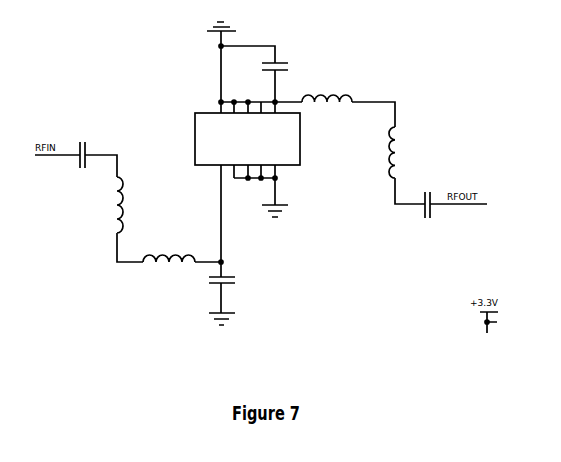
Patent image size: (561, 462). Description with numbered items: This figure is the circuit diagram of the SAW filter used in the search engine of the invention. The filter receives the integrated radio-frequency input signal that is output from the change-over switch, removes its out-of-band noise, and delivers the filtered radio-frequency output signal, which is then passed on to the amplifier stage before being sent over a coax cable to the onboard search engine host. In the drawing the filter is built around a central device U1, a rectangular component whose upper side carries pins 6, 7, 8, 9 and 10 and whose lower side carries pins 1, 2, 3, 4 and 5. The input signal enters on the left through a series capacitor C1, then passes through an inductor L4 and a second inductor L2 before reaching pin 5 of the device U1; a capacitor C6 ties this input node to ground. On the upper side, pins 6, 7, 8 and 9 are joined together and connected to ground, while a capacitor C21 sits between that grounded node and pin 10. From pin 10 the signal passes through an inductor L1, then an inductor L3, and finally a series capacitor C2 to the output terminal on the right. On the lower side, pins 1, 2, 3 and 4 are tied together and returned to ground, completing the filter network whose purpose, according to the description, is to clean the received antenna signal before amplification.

The integrated circuit U1 is at (247, 133).
The capacitor C1 is at (76, 153).
The capacitor C2 is at (453, 200).
The capacitor C6 is at (229, 287).
The capacitor C21 is at (283, 68).
The inductor L1 is at (348, 107).
The inductor L2 is at (182, 254).
The inductor L3 is at (407, 165).
The inductor L4 is at (130, 219).
The pin 1 is at (269, 185).
The pin 2 is at (255, 179).
The pin 3 is at (242, 179).
The pin 4 is at (228, 179).
The pin 5 is at (215, 213).
The pin 6 is at (215, 102).
The pin 7 is at (228, 102).
The pin 8 is at (242, 102).
The pin 9 is at (255, 102).
The pin 10 is at (269, 100).